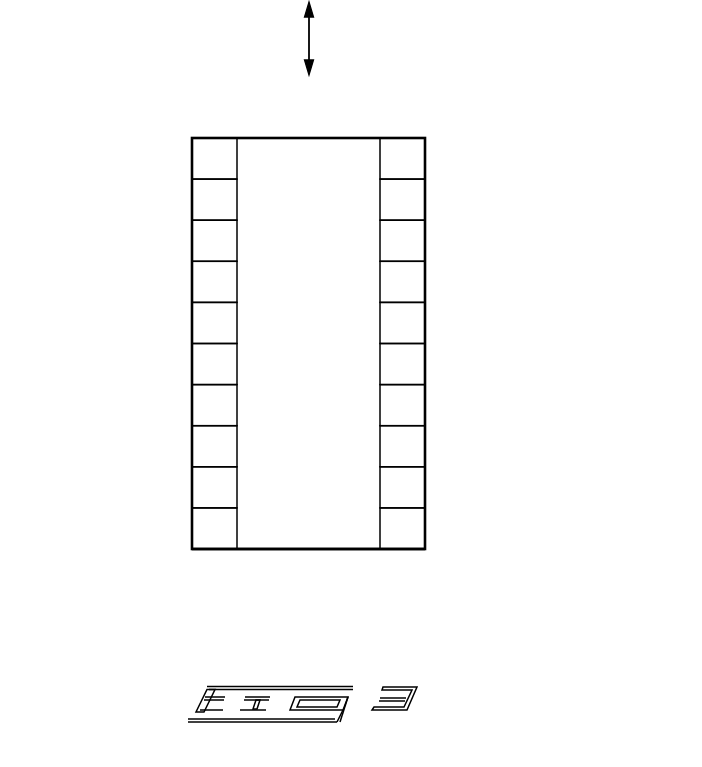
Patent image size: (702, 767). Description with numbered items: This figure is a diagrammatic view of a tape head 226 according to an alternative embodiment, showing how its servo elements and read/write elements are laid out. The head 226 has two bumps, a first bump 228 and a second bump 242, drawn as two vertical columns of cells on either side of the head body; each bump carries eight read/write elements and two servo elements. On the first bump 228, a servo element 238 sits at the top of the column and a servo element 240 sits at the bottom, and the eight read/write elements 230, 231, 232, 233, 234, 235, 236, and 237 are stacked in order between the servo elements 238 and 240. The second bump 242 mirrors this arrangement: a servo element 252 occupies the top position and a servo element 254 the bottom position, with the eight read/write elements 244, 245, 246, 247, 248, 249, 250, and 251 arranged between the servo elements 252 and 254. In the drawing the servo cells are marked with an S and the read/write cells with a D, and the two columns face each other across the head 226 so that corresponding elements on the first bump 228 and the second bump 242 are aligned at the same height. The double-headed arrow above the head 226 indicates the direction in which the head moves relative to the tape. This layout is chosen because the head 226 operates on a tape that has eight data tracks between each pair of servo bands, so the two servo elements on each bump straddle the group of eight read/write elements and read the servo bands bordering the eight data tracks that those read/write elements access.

The head 226 is at (361, 117).
The first bump 228 is at (243, 578).
The second bump 242 is at (397, 590).
The servo element 238 is at (192, 161).
The servo element 240 is at (192, 530).
The servo element 252 is at (425, 161).
The servo element 254 is at (425, 530).
The read/write element 230 is at (192, 201).
The read/write element 231 is at (192, 243).
The read/write element 232 is at (192, 283).
The read/write element 233 is at (192, 326).
The read/write element 234 is at (192, 366).
The read/write element 235 is at (192, 408).
The read/write element 236 is at (192, 448).
The read/write element 237 is at (192, 490).
The read/write element 244 is at (425, 201).
The read/write element 245 is at (425, 243).
The read/write element 246 is at (425, 283).
The read/write element 247 is at (425, 326).
The read/write element 248 is at (425, 366).
The read/write element 249 is at (425, 408).
The read/write element 250 is at (425, 448).
The read/write element 251 is at (425, 490).